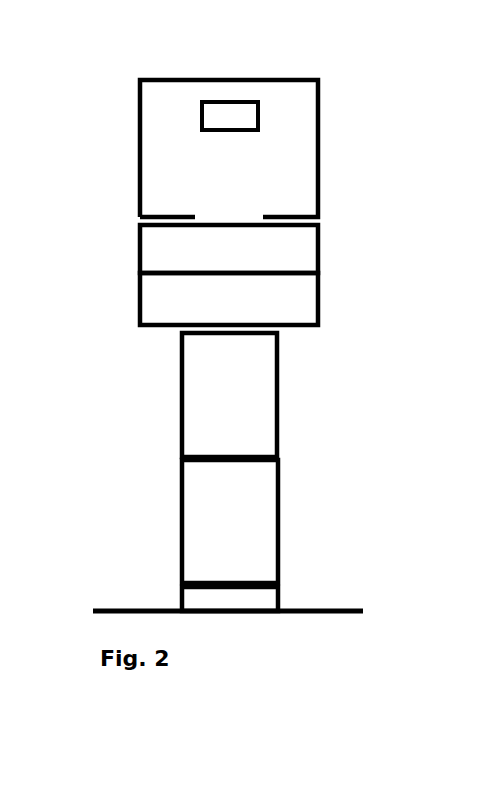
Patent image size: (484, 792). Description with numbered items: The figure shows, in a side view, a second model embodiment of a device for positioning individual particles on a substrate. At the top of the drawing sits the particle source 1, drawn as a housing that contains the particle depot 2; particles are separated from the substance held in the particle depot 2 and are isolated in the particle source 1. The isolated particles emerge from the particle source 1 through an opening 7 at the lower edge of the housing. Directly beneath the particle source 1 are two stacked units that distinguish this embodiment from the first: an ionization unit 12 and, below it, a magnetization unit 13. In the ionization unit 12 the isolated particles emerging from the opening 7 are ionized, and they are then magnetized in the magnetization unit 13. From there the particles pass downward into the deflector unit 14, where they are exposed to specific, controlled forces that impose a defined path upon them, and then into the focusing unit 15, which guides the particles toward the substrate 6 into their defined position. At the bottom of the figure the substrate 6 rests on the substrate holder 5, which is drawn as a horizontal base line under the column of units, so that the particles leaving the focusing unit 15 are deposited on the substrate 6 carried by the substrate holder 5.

The particle source 1 is at (280, 178).
The particle depot 2 is at (231, 118).
The substrate holder 5 is at (147, 610).
The substrate 6 is at (250, 602).
The opening 7 is at (228, 216).
The ionization unit 12 is at (270, 256).
The magnetization unit 13 is at (270, 303).
The deflector unit 14 is at (248, 393).
The focusing unit 15 is at (245, 523).